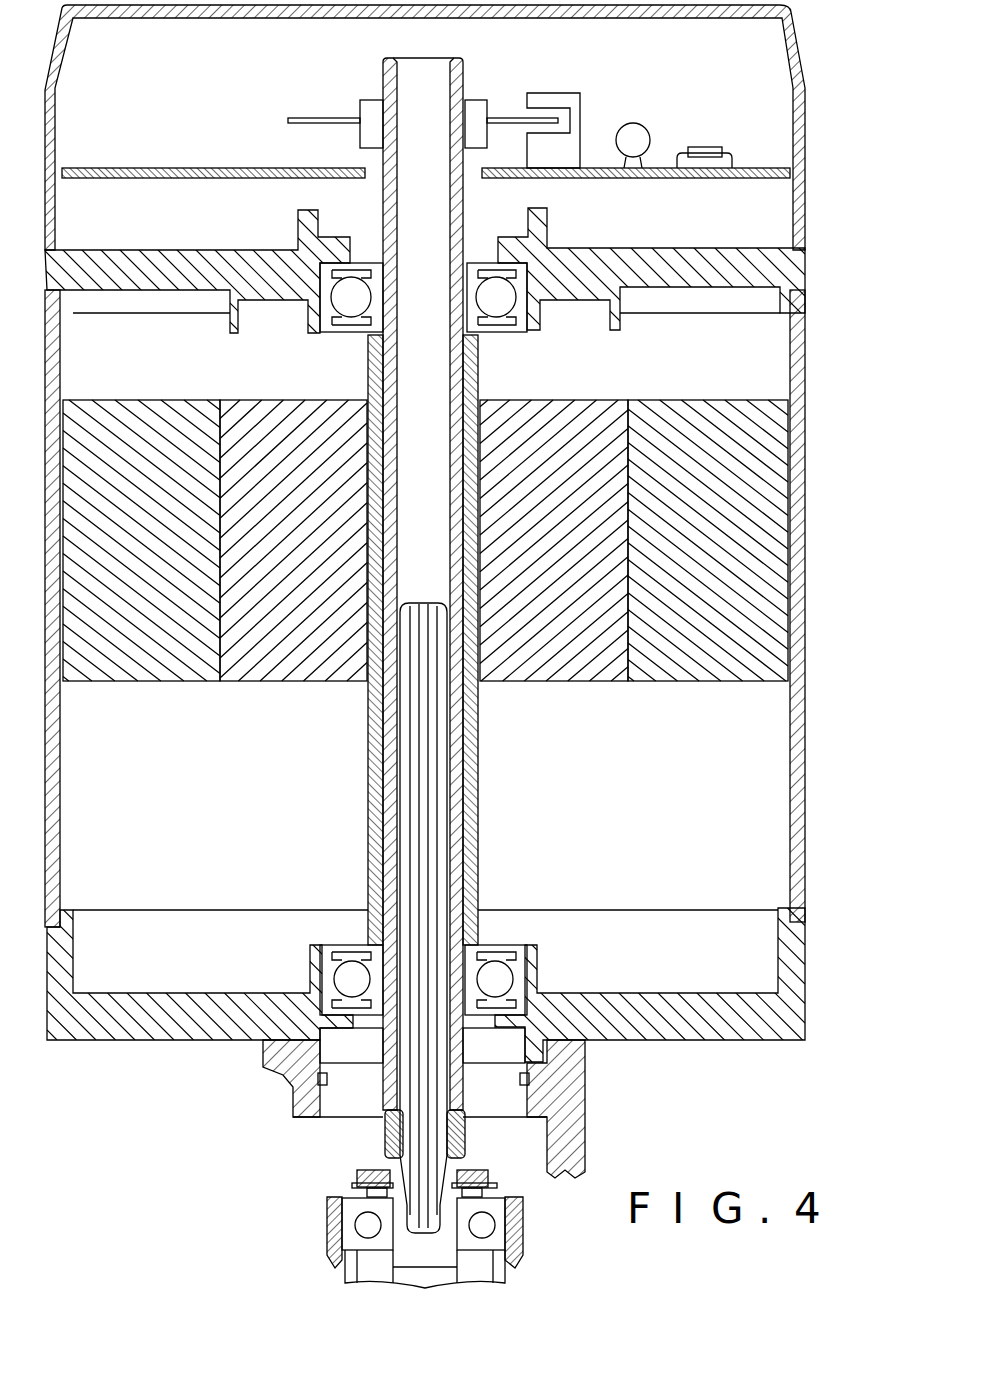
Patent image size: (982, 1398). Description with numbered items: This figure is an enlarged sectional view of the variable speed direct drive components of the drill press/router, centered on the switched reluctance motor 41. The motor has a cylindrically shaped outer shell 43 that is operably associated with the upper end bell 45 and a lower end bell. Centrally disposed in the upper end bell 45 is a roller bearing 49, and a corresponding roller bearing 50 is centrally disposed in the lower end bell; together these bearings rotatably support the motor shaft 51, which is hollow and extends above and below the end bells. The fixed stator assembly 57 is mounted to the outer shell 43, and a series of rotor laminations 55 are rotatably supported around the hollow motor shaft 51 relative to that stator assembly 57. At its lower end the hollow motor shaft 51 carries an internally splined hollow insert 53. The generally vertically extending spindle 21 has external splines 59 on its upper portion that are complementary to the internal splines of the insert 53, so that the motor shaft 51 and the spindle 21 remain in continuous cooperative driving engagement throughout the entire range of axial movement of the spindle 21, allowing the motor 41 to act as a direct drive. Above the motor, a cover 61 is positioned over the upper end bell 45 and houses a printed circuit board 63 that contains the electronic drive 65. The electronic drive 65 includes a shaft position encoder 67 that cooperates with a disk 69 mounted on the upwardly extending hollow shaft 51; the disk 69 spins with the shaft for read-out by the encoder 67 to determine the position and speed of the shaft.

The spindle 21 is at (400, 1250).
The switched reluctance motor 41 is at (836, 366).
The outer shell 43 is at (803, 518).
The upper end bell 45 is at (770, 263).
The roller bearing 49 is at (517, 318).
The roller bearing 50 is at (520, 953).
The motor shaft 51 is at (470, 855).
The splined insert 53 is at (476, 381).
The rotor laminations 55 is at (592, 420).
The stator assembly 57 is at (703, 423).
The external splines 59 is at (437, 771).
The cover 61 is at (806, 80).
The printed circuit board 63 is at (698, 178).
The electronic drive 65 is at (709, 147).
The shaft position encoder 67 is at (565, 147).
The disk 69 is at (510, 117).